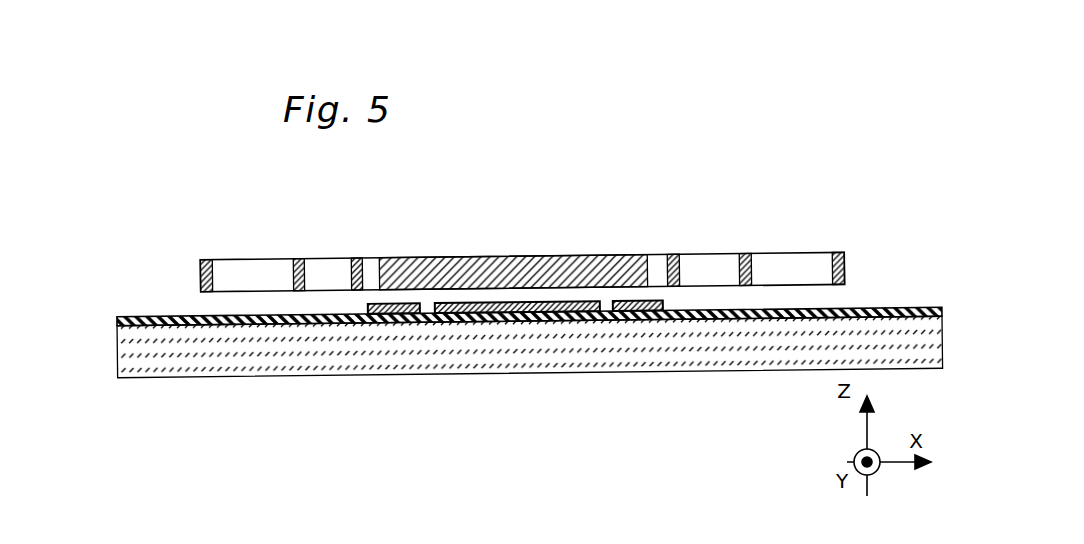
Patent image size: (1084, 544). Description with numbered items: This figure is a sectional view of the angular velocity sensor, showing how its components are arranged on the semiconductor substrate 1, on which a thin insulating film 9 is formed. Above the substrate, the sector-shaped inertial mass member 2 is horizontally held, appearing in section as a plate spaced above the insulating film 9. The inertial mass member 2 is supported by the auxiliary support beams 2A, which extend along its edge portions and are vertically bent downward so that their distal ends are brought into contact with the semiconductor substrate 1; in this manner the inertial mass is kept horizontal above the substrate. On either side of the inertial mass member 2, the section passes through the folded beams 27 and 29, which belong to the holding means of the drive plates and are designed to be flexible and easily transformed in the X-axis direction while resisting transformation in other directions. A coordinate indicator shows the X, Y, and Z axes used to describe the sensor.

The semiconductor substrate 1 is at (160, 368).
The thin insulating film 9 is at (138, 313).
The inertial mass member 2 is at (488, 256).
The auxiliary support beam 2A is at (353, 256).
The folded beam 27 is at (294, 255).
The folded beam 29 is at (752, 255).